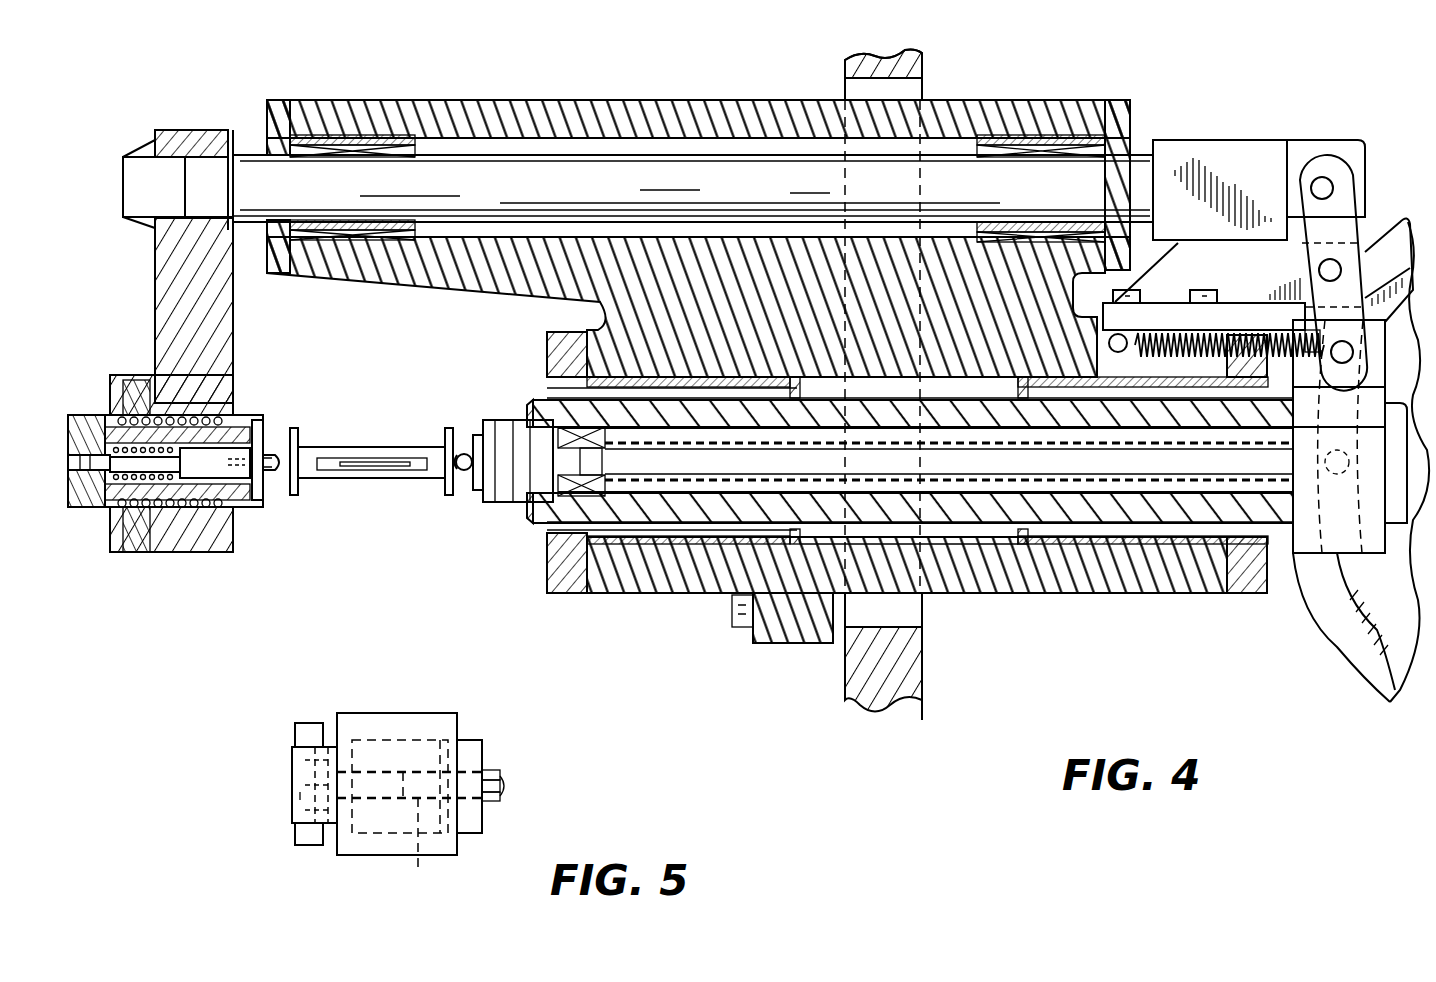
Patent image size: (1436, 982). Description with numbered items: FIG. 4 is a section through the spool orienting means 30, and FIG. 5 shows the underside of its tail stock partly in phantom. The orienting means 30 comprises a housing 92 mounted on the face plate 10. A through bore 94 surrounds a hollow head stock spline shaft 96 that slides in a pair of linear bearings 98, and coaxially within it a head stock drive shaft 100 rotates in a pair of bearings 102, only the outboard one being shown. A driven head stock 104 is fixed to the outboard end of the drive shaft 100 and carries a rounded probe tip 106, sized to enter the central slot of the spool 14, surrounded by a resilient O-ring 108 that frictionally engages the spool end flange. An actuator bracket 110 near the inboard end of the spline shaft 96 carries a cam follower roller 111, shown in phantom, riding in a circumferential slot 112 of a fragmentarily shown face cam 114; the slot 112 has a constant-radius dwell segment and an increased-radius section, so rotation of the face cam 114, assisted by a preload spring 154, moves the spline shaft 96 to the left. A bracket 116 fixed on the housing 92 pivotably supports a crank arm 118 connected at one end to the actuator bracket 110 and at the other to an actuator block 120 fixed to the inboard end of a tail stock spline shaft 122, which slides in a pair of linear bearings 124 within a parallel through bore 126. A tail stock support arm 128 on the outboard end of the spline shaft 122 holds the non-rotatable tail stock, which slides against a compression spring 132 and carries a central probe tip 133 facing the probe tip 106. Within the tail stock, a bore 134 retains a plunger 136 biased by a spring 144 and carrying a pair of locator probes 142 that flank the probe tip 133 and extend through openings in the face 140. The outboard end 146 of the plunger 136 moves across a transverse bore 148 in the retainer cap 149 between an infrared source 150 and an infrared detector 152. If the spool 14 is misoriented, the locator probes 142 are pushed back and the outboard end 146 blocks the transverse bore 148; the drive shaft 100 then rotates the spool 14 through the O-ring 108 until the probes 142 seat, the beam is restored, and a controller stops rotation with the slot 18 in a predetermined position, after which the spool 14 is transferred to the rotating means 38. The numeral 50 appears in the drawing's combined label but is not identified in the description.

In FIG. 4, the face plate 10 is at (925, 697).
In FIG. 4, the spool 14 is at (336, 447).
In FIG. 4, the slot 18 is at (373, 458).
In FIG. 4, the means for orienting the spool 30 is at (810, 703).
In FIG. 4, the rotating means 38 is at (810, 703).
In FIG. 4, the actuator assembly 50 is at (875, 756).
In FIG. 4, the housing 92 is at (495, 294).
In FIG. 4, the through bore 94 is at (990, 594).
In FIG. 4, the head stock spline shaft 96 is at (1062, 594).
In FIG. 4, the linear bearings 98 is at (645, 530).
In FIG. 4, the head stock drive shaft 100 is at (702, 530).
In FIG. 4, the bearings 102 is at (550, 540).
In FIG. 4, the head stock 104 is at (507, 505).
In FIG. 4, the probe tip 106 is at (462, 452).
In FIG. 4, the O-ring 108 is at (465, 472).
In FIG. 4, the actuator bracket 110 is at (1312, 545).
In FIG. 4, the cam follower roller 111 is at (1322, 462).
In FIG. 4, the slot 112 is at (1378, 647).
In FIG. 4, the face cam 114 is at (1318, 622).
In FIG. 4, the bracket 116 is at (1282, 280).
In FIG. 4, the crank arm 118 is at (1345, 205).
In FIG. 4, the actuator block 120 is at (1201, 141).
In FIG. 4, the tail stock spline shaft 122 is at (710, 197).
In FIG. 4, the linear bearings 124 is at (390, 136).
In FIG. 4, the through bore 126 is at (560, 122).
In FIG. 4, the tail stock support arm 128 is at (155, 271).
In FIG. 4, the compression spring 132 is at (147, 378).
In FIG. 5, the compression spring 132 is at (388, 740).
In FIG. 4, the probe tip 133 is at (278, 455).
In FIG. 5, the probe tip 133 is at (508, 787).
In FIG. 4, the bore 134 is at (131, 553).
In FIG. 4, the plunger 136 is at (198, 470).
In FIG. 5, the plunger 136 is at (417, 850).
In FIG. 4, the face 140 is at (268, 500).
In FIG. 5, the face 140 is at (488, 745).
In FIG. 4, the locator probes 142 is at (280, 474).
In FIG. 5, the locator probes 142 is at (493, 772).
In FIG. 4, the spring 144 is at (106, 510).
In FIG. 4, the outboard end 146 is at (97, 455).
In FIG. 5, the outboard end 146 is at (296, 783).
In FIG. 5, the transverse bore 148 is at (295, 815).
In FIG. 5, the retainer cap 149 is at (302, 755).
In FIG. 5, the infrared source 150 is at (307, 723).
In FIG. 5, the infrared detector 152 is at (295, 846).
In FIG. 4, the preload spring 154 is at (1180, 303).